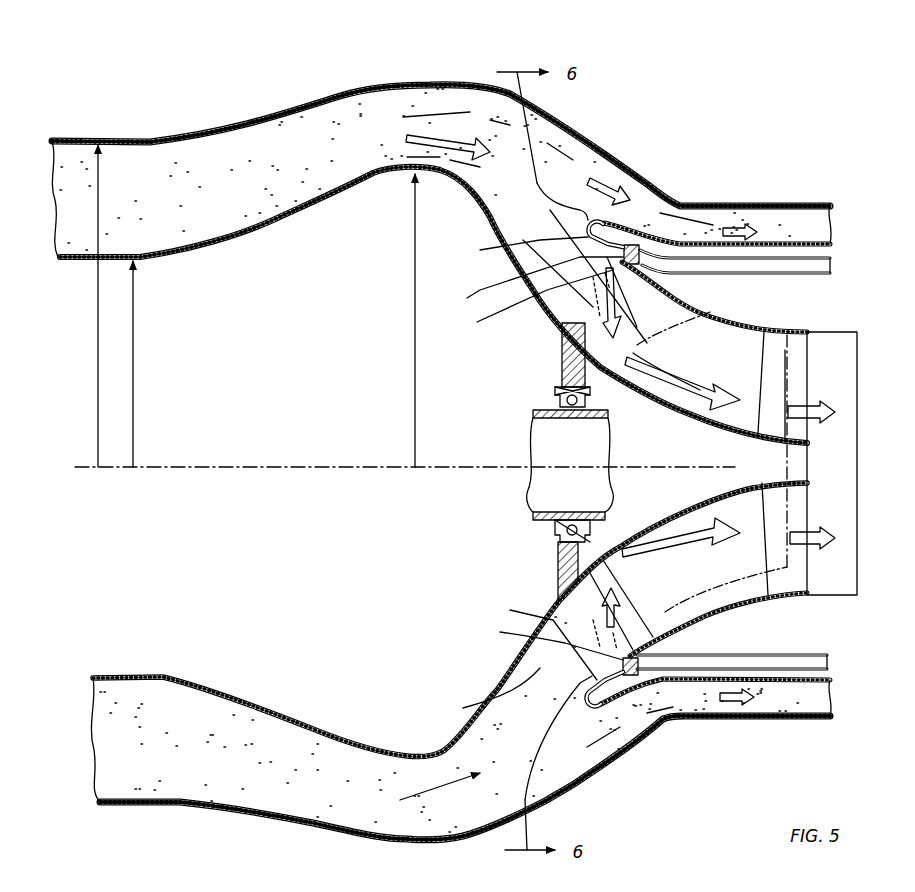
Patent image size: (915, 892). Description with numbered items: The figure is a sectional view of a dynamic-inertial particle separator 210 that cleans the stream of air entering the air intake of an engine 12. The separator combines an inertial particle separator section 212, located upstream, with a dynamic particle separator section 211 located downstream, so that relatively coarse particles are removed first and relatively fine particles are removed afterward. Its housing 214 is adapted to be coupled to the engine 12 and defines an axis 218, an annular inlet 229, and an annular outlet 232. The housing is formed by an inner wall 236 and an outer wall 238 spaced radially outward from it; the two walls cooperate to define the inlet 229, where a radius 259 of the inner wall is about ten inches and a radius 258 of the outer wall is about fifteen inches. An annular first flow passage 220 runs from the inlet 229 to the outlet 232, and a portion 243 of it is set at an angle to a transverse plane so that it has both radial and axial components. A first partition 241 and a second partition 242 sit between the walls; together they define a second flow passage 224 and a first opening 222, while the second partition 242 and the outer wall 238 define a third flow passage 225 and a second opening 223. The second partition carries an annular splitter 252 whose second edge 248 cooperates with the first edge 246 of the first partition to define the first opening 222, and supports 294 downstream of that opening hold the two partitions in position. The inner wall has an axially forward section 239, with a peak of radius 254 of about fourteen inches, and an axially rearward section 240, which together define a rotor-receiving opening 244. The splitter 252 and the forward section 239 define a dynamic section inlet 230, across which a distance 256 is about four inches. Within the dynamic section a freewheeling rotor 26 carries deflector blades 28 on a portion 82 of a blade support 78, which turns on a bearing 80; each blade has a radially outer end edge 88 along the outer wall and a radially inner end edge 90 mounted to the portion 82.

The engine 12 is at (833, 345).
The rotor 26 is at (556, 558).
The deflector blades 28 is at (580, 320).
The blade support 78 is at (557, 365).
The bearing 80 is at (548, 527).
The portion of blade support 82 is at (539, 638).
The radially outer end edge 88 is at (655, 292).
The radially inner end edge 90 is at (553, 310).
The dynamic-inertial particle separator 210 is at (276, 93).
The dynamic particle separator section 211 is at (483, 383).
The inertial particle separator section 212 is at (621, 150).
The housing 214 is at (426, 84).
The axis 218 is at (233, 462).
The first flow passage 220 is at (297, 190).
The first opening 222 is at (525, 458).
The second opening 223 is at (594, 173).
The second flow passage 224 is at (723, 268).
The third flow passage 225 is at (747, 217).
The inlet 229 is at (78, 232).
The dynamic section inlet 230 is at (480, 250).
The outlet 232 is at (797, 436).
The inner wall 236 is at (457, 193).
The outer wall 238 is at (589, 138).
The axially forward section 239 is at (202, 247).
The axially rearward section 240 is at (688, 420).
The first partition 241 is at (666, 286).
The second partition 242 is at (599, 230).
The portion of first flow passage 243 is at (524, 302).
The rotor-receiving opening 244 is at (600, 370).
The first edge 246 is at (666, 364).
The second edge 248 is at (606, 236).
The splitter 252 is at (547, 200).
The radius of peak 254 is at (415, 354).
The distance across dynamic section inlet 256 is at (490, 709).
The radius of outer wall 258 is at (100, 408).
The radius of inner wall 259 is at (135, 378).
The supports 294 is at (660, 645).